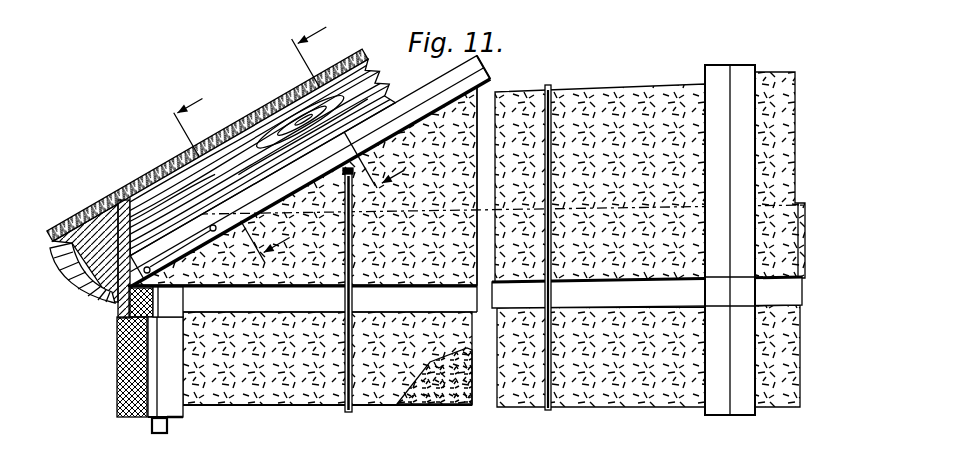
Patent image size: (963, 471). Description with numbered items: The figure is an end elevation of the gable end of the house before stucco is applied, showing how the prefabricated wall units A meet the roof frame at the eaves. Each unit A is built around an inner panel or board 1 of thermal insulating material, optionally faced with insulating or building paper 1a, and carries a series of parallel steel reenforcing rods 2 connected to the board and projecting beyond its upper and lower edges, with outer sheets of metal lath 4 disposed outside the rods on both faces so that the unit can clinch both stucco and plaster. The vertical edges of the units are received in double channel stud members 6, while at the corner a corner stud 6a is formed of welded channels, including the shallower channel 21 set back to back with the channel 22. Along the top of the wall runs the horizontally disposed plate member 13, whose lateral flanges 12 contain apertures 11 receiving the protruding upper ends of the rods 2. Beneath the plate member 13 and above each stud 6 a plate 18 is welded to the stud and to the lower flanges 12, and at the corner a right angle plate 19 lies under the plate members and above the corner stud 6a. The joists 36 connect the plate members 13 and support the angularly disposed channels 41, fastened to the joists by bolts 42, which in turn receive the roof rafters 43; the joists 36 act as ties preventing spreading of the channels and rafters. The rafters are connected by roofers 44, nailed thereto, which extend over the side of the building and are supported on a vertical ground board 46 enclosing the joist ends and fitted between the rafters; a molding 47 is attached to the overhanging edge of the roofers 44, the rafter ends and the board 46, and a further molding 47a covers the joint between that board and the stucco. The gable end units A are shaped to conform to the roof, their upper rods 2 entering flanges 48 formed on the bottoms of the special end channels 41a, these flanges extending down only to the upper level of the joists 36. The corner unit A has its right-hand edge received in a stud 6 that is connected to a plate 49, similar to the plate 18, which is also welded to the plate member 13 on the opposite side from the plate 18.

The inner panel or board 1 is at (420, 396).
The insulating or building paper 1a is at (142, 433).
The steel reenforcing rods 2 is at (346, 410).
The metal lath 4 is at (116, 347).
The stud members 6 is at (722, 416).
The corner stud 6a is at (173, 419).
The apertures 11 is at (342, 308).
The lateral flanges 12 is at (252, 309).
The plate member 13 is at (814, 292).
The plate 18 is at (722, 310).
The right angle plate 19 is at (180, 321).
The channel 21 is at (152, 373).
The channel 22 is at (166, 405).
The joists 36 is at (799, 228).
The channels 41 is at (203, 230).
The special end channels 41a is at (480, 64).
The bolts 42 is at (180, 249).
The roof rafters 43 is at (380, 108).
The roofers 44 is at (347, 63).
The ground board 46 is at (90, 283).
The molding 47 is at (68, 268).
The molding 47a is at (114, 311).
The flanges 48 is at (492, 86).
The plate 49 is at (713, 279).
The units A is at (383, 390).